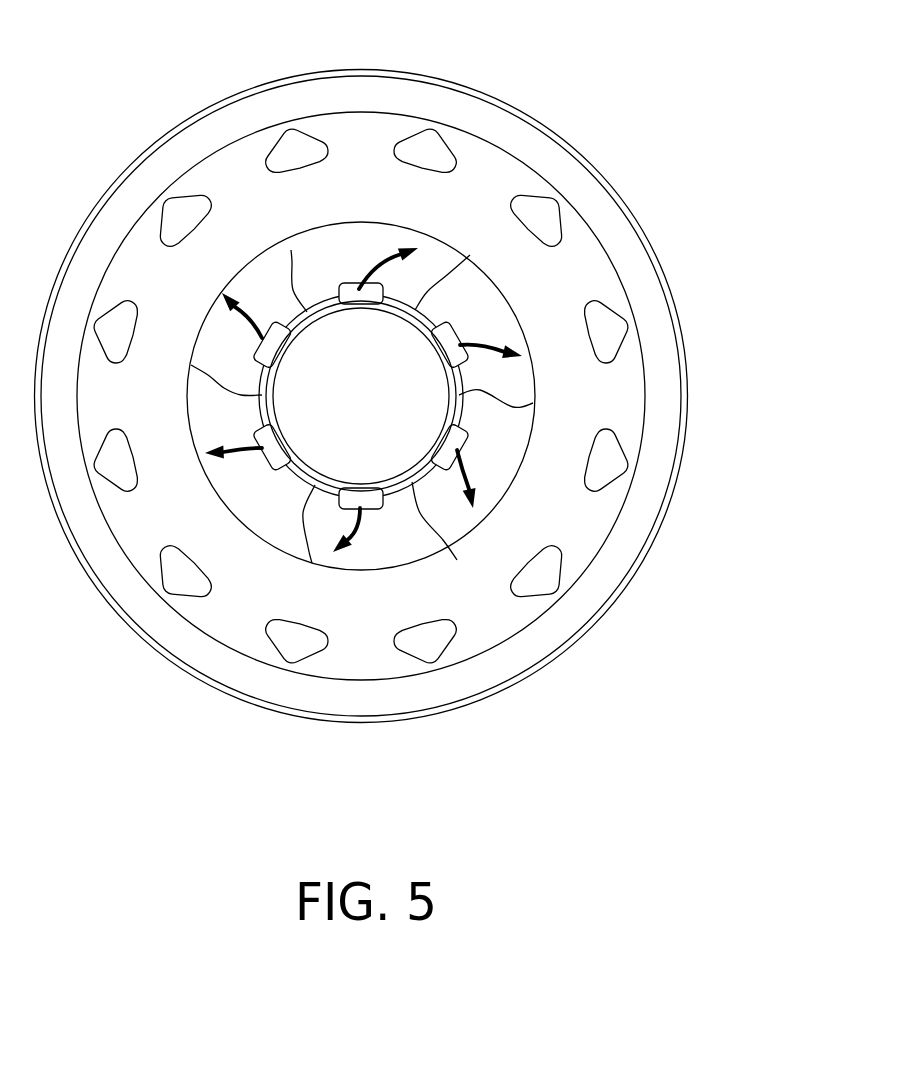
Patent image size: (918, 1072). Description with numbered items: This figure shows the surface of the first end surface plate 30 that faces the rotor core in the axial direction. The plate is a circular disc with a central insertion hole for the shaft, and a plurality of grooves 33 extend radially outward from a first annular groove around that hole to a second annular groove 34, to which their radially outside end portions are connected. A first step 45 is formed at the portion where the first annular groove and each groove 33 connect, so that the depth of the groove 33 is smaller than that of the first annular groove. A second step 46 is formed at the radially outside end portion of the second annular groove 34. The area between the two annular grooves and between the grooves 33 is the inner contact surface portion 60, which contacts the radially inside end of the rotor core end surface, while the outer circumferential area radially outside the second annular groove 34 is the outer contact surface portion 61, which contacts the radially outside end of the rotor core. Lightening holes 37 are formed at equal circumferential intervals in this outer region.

The first end surface plate 30 is at (538, 143).
The groove 33 is at (352, 290).
The second annular groove 34 is at (223, 415).
The lightening hole 37 is at (172, 590).
The first step 45 is at (308, 317).
The second step 46 is at (214, 300).
The inner contact surface portion 60 is at (533, 403).
The outer contact surface portion 61 is at (228, 165).